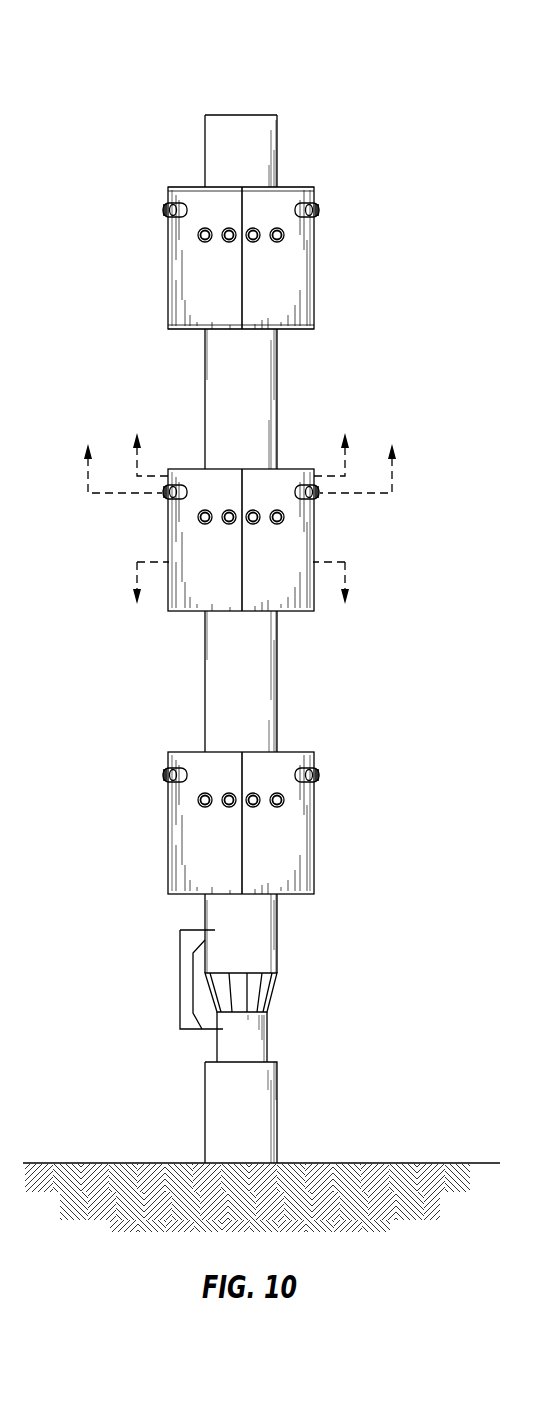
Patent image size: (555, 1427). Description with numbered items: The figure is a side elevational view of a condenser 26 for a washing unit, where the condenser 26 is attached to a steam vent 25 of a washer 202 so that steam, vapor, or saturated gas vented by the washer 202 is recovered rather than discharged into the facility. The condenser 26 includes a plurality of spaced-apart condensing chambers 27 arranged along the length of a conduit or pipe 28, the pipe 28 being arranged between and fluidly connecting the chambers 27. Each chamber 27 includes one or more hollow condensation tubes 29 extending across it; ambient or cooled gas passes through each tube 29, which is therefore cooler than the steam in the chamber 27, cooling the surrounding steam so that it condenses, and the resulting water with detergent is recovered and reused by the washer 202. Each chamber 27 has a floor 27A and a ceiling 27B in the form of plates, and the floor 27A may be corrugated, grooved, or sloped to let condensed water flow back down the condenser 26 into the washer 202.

The condenser 26 is at (113, 58).
The conduit or pipe 28 is at (205, 146).
The condensing chamber 27 is at (180, 273).
The ceiling 27B is at (294, 187).
The floor 27A is at (294, 329).
The hollow condensation tube 29 is at (165, 207).
The steam vent 25 is at (268, 1135).
The washer 202 is at (422, 1185).